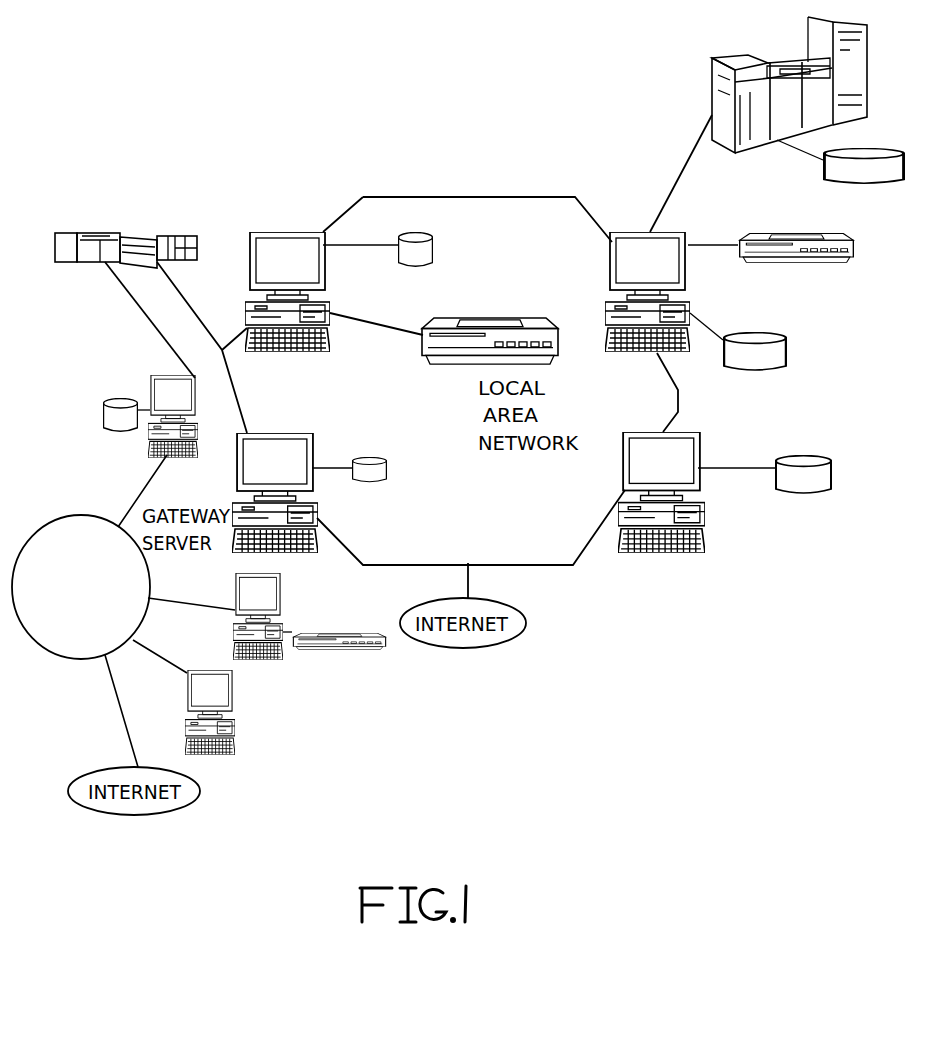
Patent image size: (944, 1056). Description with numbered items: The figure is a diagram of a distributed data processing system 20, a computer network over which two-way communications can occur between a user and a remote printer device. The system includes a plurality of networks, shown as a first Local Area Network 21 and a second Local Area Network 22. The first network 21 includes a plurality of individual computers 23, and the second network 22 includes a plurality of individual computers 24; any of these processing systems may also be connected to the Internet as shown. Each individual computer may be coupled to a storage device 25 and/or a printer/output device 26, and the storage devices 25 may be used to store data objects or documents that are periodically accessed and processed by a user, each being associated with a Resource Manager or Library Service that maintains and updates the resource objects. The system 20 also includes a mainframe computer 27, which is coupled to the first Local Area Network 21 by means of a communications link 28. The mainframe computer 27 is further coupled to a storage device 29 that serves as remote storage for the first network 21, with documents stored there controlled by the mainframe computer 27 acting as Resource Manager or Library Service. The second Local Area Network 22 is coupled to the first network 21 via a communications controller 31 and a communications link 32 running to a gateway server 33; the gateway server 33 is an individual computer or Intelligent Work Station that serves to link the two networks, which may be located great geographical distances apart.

The distributed data processing system 20 is at (468, 168).
The local area network 21 is at (573, 565).
The local area network 22 is at (83, 517).
The individual computer 23 is at (272, 232).
The individual computer 24 is at (277, 585).
The storage device 25 is at (434, 250).
The printer/output device 26 is at (488, 327).
The mainframe computer 27 is at (753, 62).
The communications link 28 is at (187, 297).
The storage device 29 is at (853, 150).
The communications controller 31 is at (193, 238).
The communications link 32 is at (138, 307).
The gateway server 33 is at (157, 378).